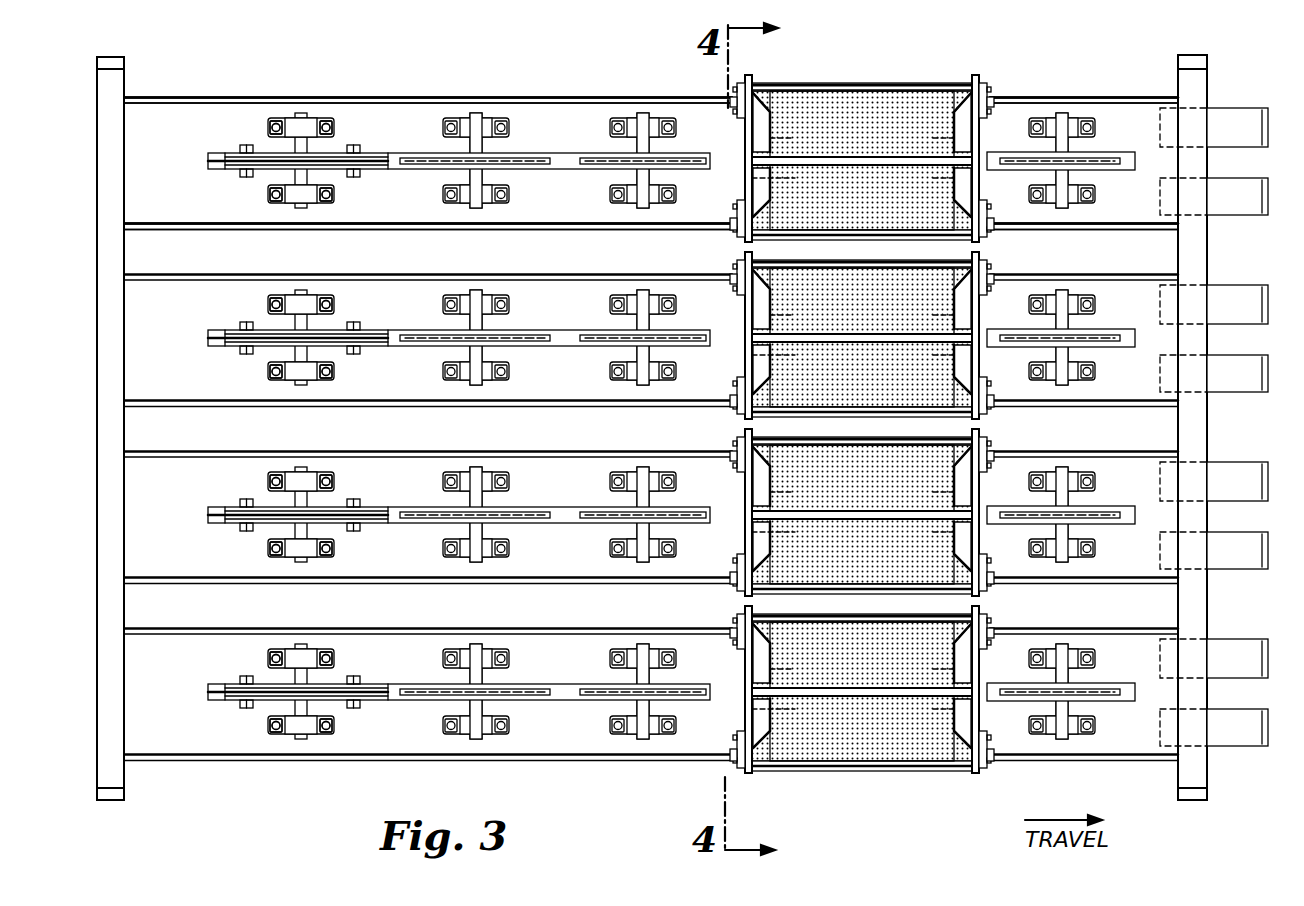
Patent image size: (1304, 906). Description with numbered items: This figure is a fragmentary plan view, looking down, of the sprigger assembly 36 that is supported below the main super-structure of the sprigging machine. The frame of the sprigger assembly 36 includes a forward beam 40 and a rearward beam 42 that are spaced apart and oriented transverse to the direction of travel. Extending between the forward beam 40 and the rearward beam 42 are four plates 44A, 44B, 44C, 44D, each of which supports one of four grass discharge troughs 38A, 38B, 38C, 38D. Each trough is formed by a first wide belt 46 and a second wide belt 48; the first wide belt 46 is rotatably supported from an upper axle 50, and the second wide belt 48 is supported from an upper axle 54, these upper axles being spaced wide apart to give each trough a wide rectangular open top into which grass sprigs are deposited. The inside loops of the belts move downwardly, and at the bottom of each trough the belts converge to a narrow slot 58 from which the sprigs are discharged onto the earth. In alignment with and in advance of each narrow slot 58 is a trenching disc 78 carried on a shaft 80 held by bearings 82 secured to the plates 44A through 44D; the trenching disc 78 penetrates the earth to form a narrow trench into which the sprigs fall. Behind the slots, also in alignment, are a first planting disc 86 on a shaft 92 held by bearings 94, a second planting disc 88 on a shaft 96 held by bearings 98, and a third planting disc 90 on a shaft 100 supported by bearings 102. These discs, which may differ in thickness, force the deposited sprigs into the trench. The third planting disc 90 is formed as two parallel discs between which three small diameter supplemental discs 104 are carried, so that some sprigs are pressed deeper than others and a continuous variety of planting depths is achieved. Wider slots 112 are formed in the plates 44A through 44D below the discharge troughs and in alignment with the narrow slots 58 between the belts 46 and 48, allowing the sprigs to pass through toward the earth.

The sprigger assembly 36 is at (366, 83).
The grass discharge trough 38A is at (897, 168).
The grass discharge trough 38B is at (897, 345).
The grass discharge trough 38C is at (897, 522).
The grass discharge trough 38D is at (898, 699).
The forward beam 40 is at (1197, 82).
The rearward beam 42 is at (112, 92).
The plate 44A is at (696, 180).
The plate 44B is at (696, 357).
The plate 44C is at (696, 534).
The plate 44D is at (696, 711).
The first wide belt 46 is at (862, 463).
The second wide belt 48 is at (862, 389).
The upper axle 50 is at (838, 504).
The upper axle 54 is at (842, 382).
The narrow slot 58 is at (862, 404).
The trenching disc 78 is at (1064, 407).
The shaft 80 is at (1068, 453).
The bearings 82 is at (1027, 426).
The first planting disc 86 is at (634, 403).
The second planting disc 88 is at (471, 403).
The third planting disc 90 is at (269, 430).
The shaft 92 is at (643, 452).
The bearings 94 is at (604, 452).
The shaft 96 is at (476, 452).
The bearings 98 is at (502, 452).
The shaft 100 is at (290, 453).
The bearings 102 is at (253, 457).
The supplemental discs 104 is at (426, 468).
The wider slots 112 is at (741, 456).